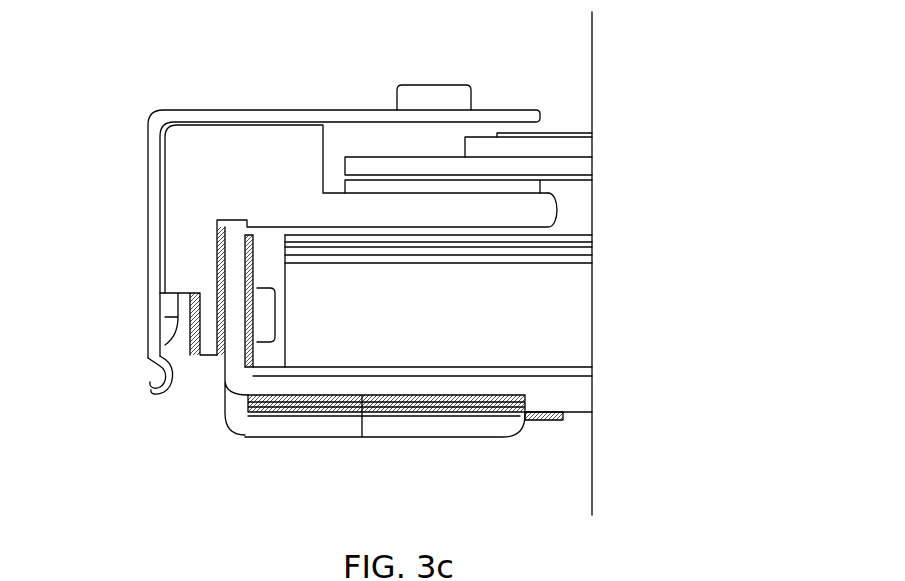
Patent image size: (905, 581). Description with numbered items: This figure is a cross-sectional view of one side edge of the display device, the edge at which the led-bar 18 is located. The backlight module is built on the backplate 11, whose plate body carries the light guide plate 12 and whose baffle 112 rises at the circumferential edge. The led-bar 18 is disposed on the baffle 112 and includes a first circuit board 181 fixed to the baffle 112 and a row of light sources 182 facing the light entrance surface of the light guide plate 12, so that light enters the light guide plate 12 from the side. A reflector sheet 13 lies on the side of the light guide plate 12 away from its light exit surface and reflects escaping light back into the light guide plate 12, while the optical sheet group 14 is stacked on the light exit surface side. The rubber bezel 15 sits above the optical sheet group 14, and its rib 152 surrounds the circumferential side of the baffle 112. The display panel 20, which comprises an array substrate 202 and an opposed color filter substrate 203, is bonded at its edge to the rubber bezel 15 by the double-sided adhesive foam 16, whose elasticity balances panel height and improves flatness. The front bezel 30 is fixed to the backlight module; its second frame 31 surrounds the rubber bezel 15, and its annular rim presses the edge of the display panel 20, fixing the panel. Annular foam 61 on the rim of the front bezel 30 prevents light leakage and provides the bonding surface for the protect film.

The backplate 11 is at (478, 384).
The light guide plate 12 is at (520, 316).
The reflector sheet 13 is at (440, 373).
The optical sheet group 14 is at (495, 246).
The rubber bezel 15 is at (245, 172).
The double-sided adhesive foam 16 is at (495, 186).
The led-bar 18 is at (188, 379).
The first circuit board 181 is at (252, 308).
The light sources 182 is at (260, 322).
The display panel 20 is at (520, 160).
The front bezel 30 is at (298, 116).
The second frame 31 is at (153, 231).
The annular foam 61 is at (437, 101).
The baffle 112 is at (235, 283).
The rib 152 is at (203, 258).
The array substrate 202 is at (395, 163).
The color filter substrate 203 is at (495, 143).